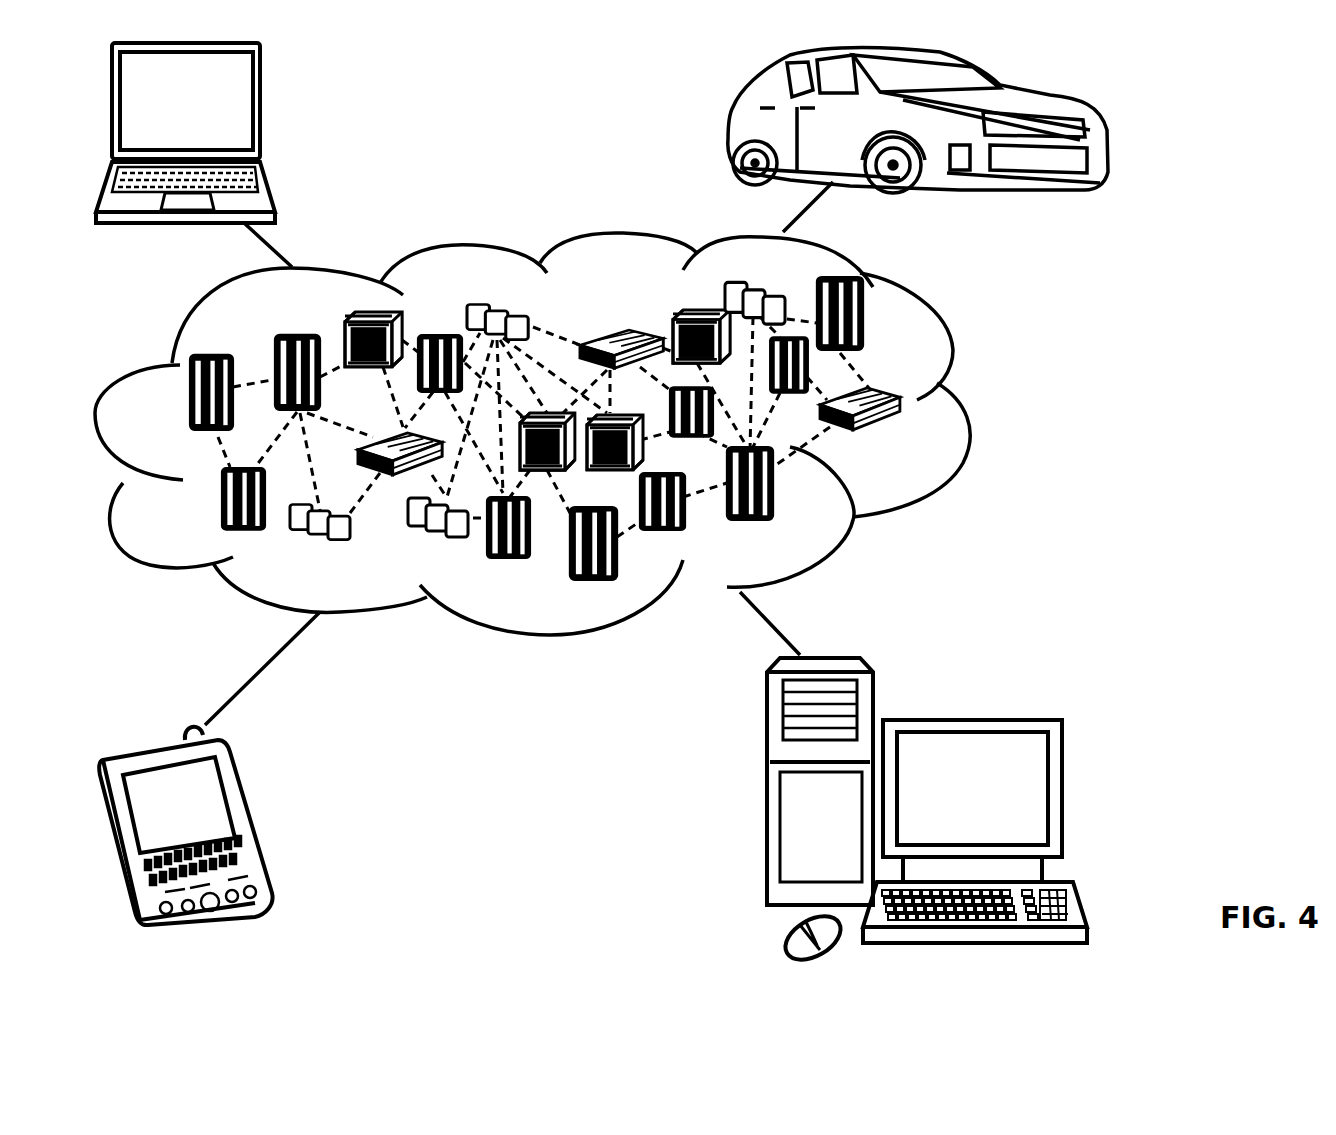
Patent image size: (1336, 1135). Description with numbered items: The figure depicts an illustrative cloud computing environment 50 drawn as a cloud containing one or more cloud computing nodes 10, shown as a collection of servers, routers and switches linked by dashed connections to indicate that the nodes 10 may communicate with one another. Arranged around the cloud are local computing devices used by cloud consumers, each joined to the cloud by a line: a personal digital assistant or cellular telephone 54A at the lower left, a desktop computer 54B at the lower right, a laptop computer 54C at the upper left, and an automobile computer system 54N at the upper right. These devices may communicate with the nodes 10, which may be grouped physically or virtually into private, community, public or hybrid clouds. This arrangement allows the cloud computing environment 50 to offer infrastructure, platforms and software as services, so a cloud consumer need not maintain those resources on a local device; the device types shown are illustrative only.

The cloud computing node 10 is at (905, 440).
The cloud computing environment 50 is at (972, 405).
The personal digital assistant or cellular telephone 54A is at (251, 820).
The desktop computer 54B is at (970, 717).
The laptop computer 54C is at (262, 110).
The automobile computer system 54N is at (733, 125).